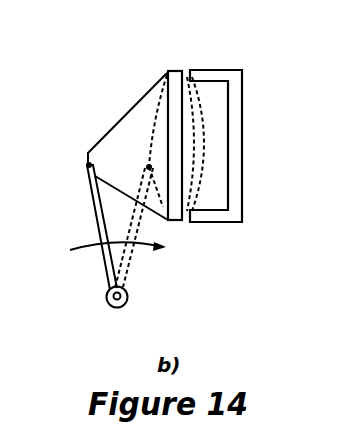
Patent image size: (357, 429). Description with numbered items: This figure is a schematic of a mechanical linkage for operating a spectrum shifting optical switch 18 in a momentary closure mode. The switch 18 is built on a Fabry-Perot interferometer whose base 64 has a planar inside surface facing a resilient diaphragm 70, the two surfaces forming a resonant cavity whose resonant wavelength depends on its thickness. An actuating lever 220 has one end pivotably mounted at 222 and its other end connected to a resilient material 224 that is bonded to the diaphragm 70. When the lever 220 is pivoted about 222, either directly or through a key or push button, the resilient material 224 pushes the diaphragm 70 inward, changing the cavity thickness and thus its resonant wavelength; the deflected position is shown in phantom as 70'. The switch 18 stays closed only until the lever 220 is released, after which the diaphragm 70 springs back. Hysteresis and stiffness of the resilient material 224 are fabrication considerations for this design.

The switch 18 is at (216, 59).
The resilient diaphragm 70 is at (157, 128).
The second lens position 70' is at (240, 141).
The base 64 is at (235, 195).
The actuating lever 220 is at (87, 190).
The pivot mount 222 is at (127, 300).
The resilient material 224 is at (152, 162).